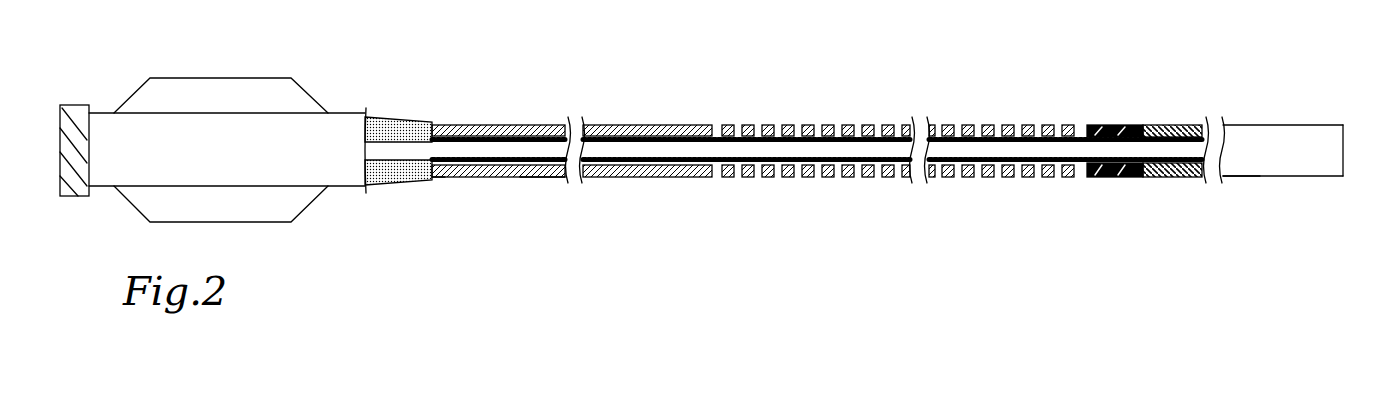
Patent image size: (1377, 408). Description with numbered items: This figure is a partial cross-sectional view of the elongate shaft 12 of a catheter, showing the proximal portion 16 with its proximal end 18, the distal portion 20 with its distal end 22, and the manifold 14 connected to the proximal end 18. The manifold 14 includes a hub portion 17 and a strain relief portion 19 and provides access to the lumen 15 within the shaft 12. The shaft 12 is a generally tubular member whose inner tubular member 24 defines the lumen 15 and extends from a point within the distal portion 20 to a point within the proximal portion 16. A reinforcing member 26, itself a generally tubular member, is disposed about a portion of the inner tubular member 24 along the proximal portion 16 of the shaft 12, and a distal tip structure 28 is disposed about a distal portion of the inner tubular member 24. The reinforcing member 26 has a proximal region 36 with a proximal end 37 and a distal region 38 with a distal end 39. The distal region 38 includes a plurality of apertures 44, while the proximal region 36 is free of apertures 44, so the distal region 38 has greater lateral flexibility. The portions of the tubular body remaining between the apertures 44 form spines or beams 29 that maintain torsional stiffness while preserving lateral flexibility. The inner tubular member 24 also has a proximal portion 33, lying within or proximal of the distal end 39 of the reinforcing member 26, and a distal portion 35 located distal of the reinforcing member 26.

The elongate shaft 12 is at (858, 165).
The manifold 14 is at (214, 64).
The lumen 15 is at (755, 150).
The proximal portion 16 is at (556, 198).
The hub portion 17 is at (98, 212).
The proximal end 18 is at (433, 121).
The strain relief portion 19 is at (390, 201).
The distal portion 20 is at (1243, 192).
The distal end 22 is at (1343, 177).
The inner tubular member 24 is at (917, 160).
The reinforcing member 26 is at (871, 110).
The distal tip structure 28 is at (1126, 159).
The spines or beams 29 is at (950, 123).
The proximal portion 33 is at (1062, 110).
The distal portion 35 is at (1155, 192).
The proximal region 36 is at (596, 110).
The proximal end 37 is at (434, 180).
The distal region 38 is at (1009, 193).
The distal end 39 is at (1102, 178).
The apertures 44 is at (838, 176).